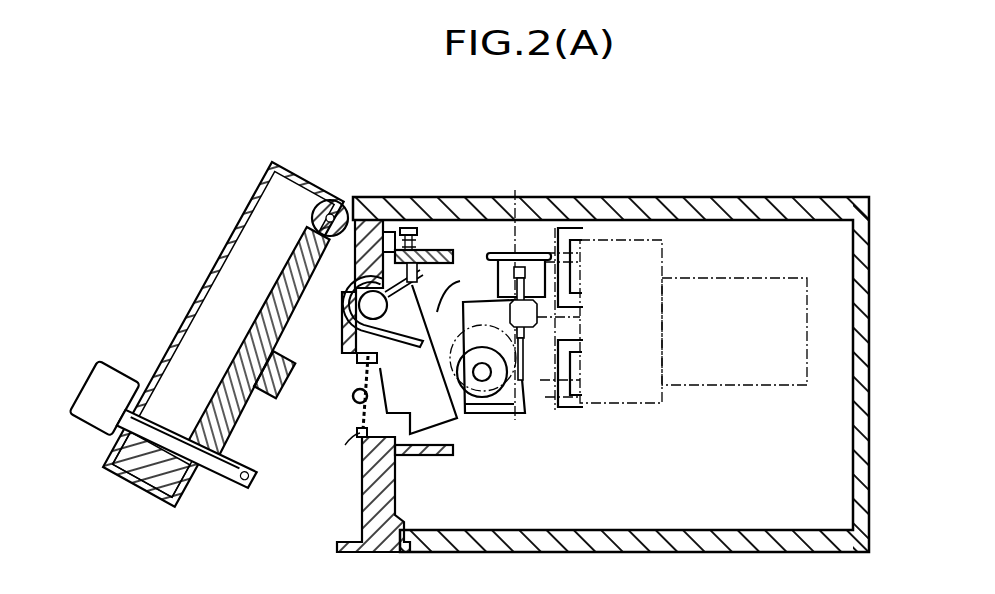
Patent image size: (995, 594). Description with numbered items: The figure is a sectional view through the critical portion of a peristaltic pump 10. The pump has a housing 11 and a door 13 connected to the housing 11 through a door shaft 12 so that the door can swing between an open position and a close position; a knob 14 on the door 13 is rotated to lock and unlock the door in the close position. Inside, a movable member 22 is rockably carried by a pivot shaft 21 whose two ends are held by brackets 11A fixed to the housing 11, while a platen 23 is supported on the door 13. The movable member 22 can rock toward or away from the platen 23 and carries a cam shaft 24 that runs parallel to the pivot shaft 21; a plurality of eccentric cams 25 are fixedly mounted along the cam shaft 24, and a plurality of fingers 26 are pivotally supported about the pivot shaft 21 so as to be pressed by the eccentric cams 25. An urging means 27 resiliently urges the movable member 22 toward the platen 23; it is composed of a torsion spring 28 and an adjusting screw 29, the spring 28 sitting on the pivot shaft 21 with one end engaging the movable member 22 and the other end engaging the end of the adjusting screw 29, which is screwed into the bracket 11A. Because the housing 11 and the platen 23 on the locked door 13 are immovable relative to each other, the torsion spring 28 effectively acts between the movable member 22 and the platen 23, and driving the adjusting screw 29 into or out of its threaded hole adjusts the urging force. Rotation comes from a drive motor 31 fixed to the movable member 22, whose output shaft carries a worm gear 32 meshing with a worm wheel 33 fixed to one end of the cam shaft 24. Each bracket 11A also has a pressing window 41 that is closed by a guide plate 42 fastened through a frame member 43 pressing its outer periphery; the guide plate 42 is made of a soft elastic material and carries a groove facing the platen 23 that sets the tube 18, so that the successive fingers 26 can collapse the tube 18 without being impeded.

The peristaltic pump 10 is at (728, 196).
The housing 11 is at (568, 207).
The bracket 11A is at (309, 238).
The door shaft 12 is at (336, 200).
The door 13 is at (222, 256).
The knob 14 is at (118, 380).
The tube 18 is at (357, 389).
The pivot shaft 21 is at (358, 300).
The movable member 22 is at (480, 412).
The platen 23 is at (271, 383).
The cam shaft 24 is at (487, 376).
The eccentric cam 25 is at (568, 361).
The finger 26 is at (437, 456).
The urging means 27 is at (400, 343).
The torsion spring 28 is at (464, 288).
The adjusting screw 29 is at (408, 224).
The drive motor 31 is at (731, 388).
The worm gear 32 is at (516, 232).
The worm wheel 33 is at (547, 393).
The pressing window 41 is at (388, 373).
The guide plate 42 is at (352, 418).
The frame member 43 is at (358, 440).